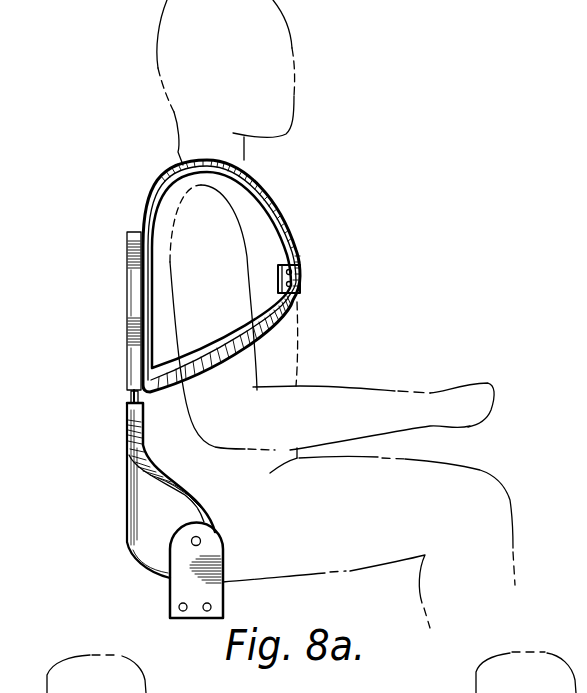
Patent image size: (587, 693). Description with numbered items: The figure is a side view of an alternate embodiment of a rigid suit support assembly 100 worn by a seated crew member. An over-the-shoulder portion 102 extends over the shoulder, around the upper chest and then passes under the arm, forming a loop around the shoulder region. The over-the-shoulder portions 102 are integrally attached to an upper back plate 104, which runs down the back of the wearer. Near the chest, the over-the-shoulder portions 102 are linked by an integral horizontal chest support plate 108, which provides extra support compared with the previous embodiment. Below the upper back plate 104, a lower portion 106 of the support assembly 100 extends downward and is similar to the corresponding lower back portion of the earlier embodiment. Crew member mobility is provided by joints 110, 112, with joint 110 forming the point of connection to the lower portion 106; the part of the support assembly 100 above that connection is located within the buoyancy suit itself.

The rigid suit support assembly 100 is at (205, 381).
The over-the-shoulder portion 102 is at (183, 165).
The upper back plate 104 is at (127, 272).
The lower portion 106 is at (127, 498).
The horizontal chest support plate 108 is at (300, 279).
The joint 110 is at (128, 398).
The joint 112 is at (195, 542).